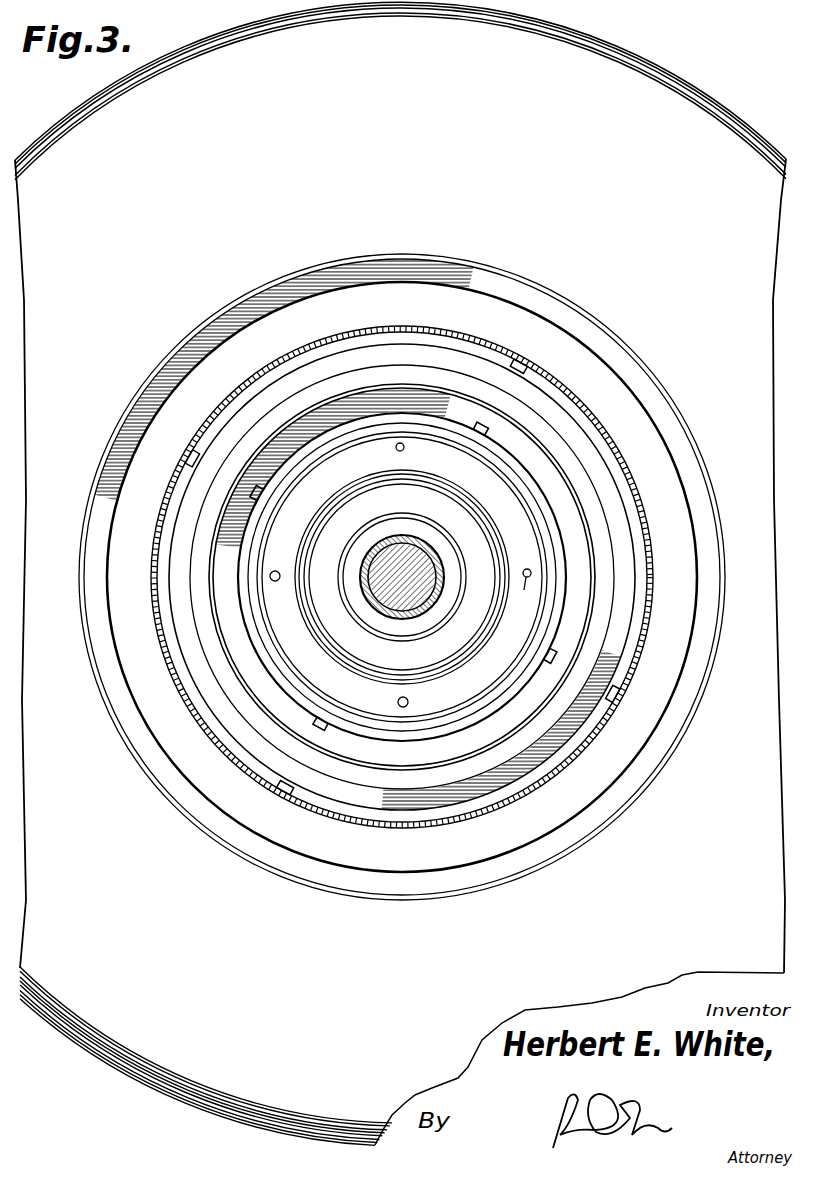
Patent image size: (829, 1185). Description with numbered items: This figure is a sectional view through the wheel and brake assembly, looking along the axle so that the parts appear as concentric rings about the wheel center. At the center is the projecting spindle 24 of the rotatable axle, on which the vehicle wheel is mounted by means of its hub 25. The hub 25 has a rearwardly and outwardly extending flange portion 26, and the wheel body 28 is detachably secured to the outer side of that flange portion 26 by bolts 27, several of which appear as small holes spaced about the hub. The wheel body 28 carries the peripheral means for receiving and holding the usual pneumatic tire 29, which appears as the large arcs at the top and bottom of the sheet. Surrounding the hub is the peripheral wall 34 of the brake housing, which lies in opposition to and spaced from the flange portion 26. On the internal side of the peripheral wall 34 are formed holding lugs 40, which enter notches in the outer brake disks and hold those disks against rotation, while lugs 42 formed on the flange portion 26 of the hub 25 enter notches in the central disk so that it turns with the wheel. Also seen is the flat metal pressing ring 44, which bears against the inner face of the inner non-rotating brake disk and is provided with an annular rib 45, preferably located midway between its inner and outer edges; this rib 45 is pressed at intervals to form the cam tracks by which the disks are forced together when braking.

The spindle 24 is at (417, 557).
The hub 25 is at (433, 563).
The flange portion 26 is at (445, 715).
The bolts 27 is at (396, 449).
The wheel body 28 is at (562, 830).
The pneumatic tire 29 is at (628, 88).
The peripheral wall 34 is at (325, 339).
The holding lugs 40 is at (190, 455).
The lugs 42 is at (270, 498).
The pressing ring 44 is at (560, 415).
The annular rib 45 is at (593, 505).